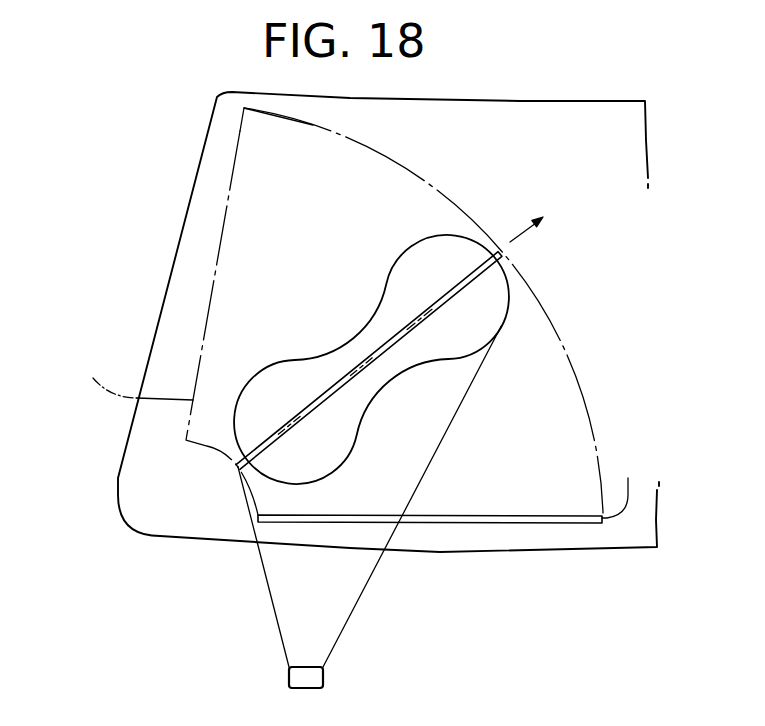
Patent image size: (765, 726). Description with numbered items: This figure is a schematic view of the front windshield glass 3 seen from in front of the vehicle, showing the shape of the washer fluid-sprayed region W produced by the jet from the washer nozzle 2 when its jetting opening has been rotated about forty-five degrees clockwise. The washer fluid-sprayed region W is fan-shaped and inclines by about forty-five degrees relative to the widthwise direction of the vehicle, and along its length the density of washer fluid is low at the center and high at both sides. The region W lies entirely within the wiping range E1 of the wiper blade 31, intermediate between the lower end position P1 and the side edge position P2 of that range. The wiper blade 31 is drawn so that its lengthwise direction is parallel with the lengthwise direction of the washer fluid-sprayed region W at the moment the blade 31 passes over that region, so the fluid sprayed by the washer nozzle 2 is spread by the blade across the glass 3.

The front windshield glass 3 is at (566, 113).
The wiper blade 31 is at (475, 265).
The washer nozzle 2 is at (323, 677).
The washer fluid-sprayed region W is at (397, 385).
The wiping range E1 is at (556, 330).
The lower end position P1 is at (626, 483).
The side edge position P2 is at (136, 375).